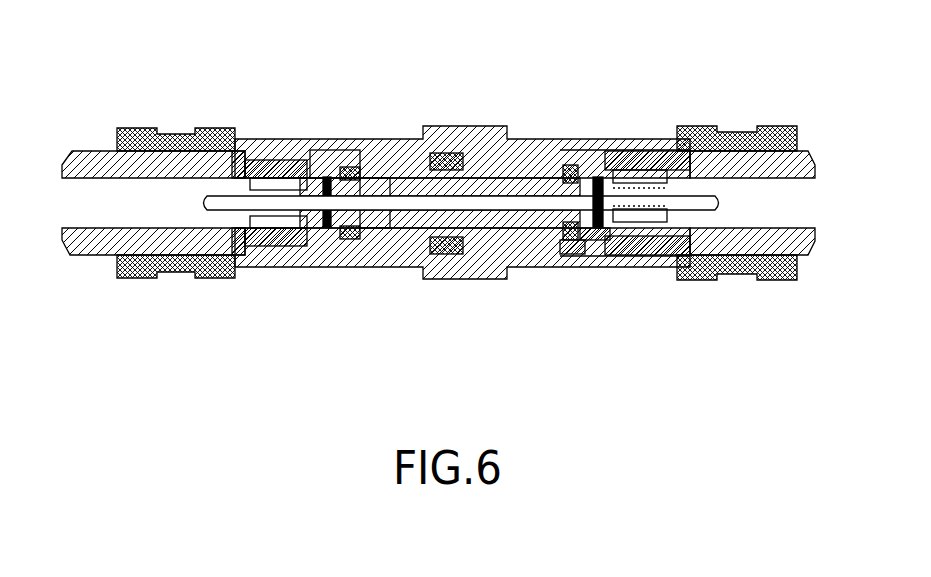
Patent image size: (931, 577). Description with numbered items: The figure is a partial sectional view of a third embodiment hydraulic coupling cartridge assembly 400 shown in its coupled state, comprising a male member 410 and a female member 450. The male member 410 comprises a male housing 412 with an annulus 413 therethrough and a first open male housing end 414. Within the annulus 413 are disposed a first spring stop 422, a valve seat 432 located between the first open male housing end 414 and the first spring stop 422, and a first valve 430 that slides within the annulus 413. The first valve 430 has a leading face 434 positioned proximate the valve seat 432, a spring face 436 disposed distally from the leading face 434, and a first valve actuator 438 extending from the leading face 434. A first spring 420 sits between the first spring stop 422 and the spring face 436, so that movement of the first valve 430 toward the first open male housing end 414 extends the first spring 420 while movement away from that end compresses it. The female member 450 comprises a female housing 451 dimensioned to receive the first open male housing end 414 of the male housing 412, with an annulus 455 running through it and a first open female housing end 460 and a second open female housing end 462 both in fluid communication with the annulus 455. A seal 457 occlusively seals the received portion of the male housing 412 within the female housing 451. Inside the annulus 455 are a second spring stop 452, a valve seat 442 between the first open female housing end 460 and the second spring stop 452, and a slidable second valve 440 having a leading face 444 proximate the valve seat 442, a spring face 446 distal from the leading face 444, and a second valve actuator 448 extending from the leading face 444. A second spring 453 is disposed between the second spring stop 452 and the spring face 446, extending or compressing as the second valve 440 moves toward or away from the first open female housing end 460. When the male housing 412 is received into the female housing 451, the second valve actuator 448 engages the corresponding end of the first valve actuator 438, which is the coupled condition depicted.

The hydraulic coupling cartridge assembly 400 is at (283, 350).
The male member 410 is at (721, 106).
The male housing 412 is at (607, 141).
The annulus 413 is at (651, 180).
The first open male housing end 414 is at (418, 160).
The first spring 420 is at (640, 192).
The first spring stop 422 is at (672, 213).
The first valve 430 is at (584, 200).
The valve seat 432 is at (568, 241).
The leading face 434 is at (583, 225).
The spring face 436 is at (597, 180).
The first valve actuator 438 is at (527, 201).
The second valve 440 is at (342, 203).
The valve seat 442 is at (355, 228).
The leading face 444 is at (358, 150).
The spring face 446 is at (320, 218).
The second valve actuator 448 is at (367, 203).
The female member 450 is at (153, 105).
The female housing 451 is at (291, 141).
The second spring stop 452 is at (233, 170).
The second spring 453 is at (272, 218).
The annulus 455 is at (145, 208).
The seal 457 is at (452, 247).
The first open female housing end 460 is at (377, 243).
The second open female housing end 462 is at (71, 192).